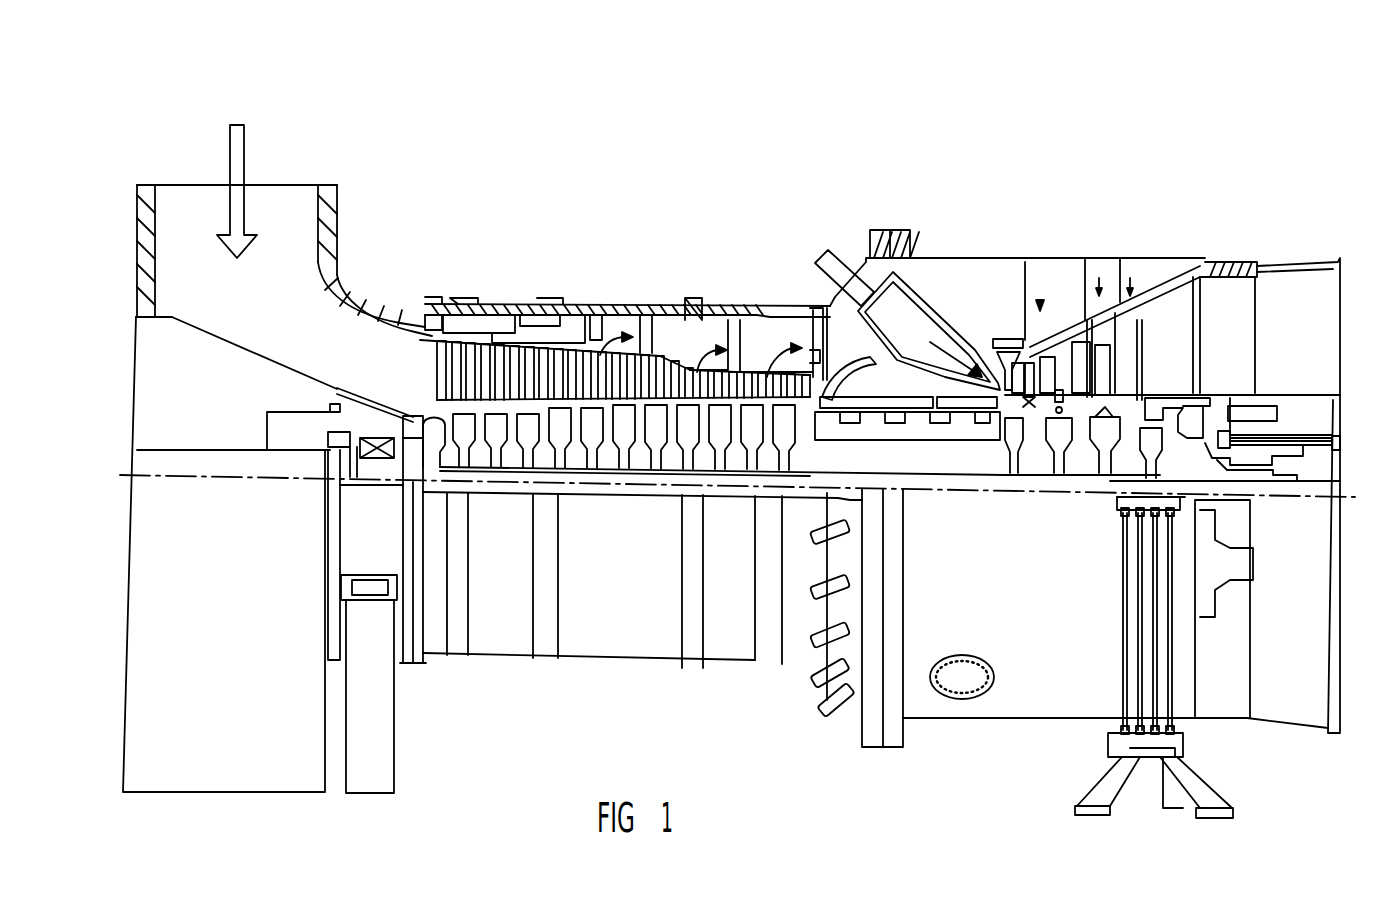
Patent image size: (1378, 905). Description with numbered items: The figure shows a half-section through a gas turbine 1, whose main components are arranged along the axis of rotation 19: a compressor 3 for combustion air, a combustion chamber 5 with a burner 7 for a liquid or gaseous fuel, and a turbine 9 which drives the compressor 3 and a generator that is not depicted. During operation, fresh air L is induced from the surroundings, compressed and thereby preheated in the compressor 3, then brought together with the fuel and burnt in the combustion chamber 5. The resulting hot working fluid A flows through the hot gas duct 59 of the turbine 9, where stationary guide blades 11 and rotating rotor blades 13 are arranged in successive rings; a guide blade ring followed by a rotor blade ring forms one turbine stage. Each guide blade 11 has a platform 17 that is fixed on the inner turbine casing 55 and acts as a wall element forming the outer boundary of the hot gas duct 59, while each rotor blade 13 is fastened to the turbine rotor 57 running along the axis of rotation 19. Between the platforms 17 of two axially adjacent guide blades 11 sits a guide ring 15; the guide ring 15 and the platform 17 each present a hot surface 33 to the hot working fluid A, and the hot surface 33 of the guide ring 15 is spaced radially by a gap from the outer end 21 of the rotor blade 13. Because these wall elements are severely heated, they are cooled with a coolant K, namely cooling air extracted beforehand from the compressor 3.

The gas turbine 1 is at (418, 118).
The fresh air L is at (237, 167).
The compressor 3 is at (485, 350).
The coolant K is at (597, 352).
The combustion chamber 5 is at (917, 302).
The burner 7 is at (836, 255).
The hot working fluid A is at (952, 357).
The turbine 9 is at (1012, 352).
The guide blade 11 is at (1127, 400).
The rotor blade 13 is at (1133, 350).
The guide ring 15 is at (1103, 322).
The platform 17 is at (1147, 440).
The axis of rotation 19 is at (232, 480).
The outer end 21 is at (1143, 320).
The hot surface 33 is at (1175, 280).
The inner turbine casing 55 is at (1066, 380).
The turbine rotor 57 is at (840, 450).
The hot gas duct 59 is at (1069, 405).